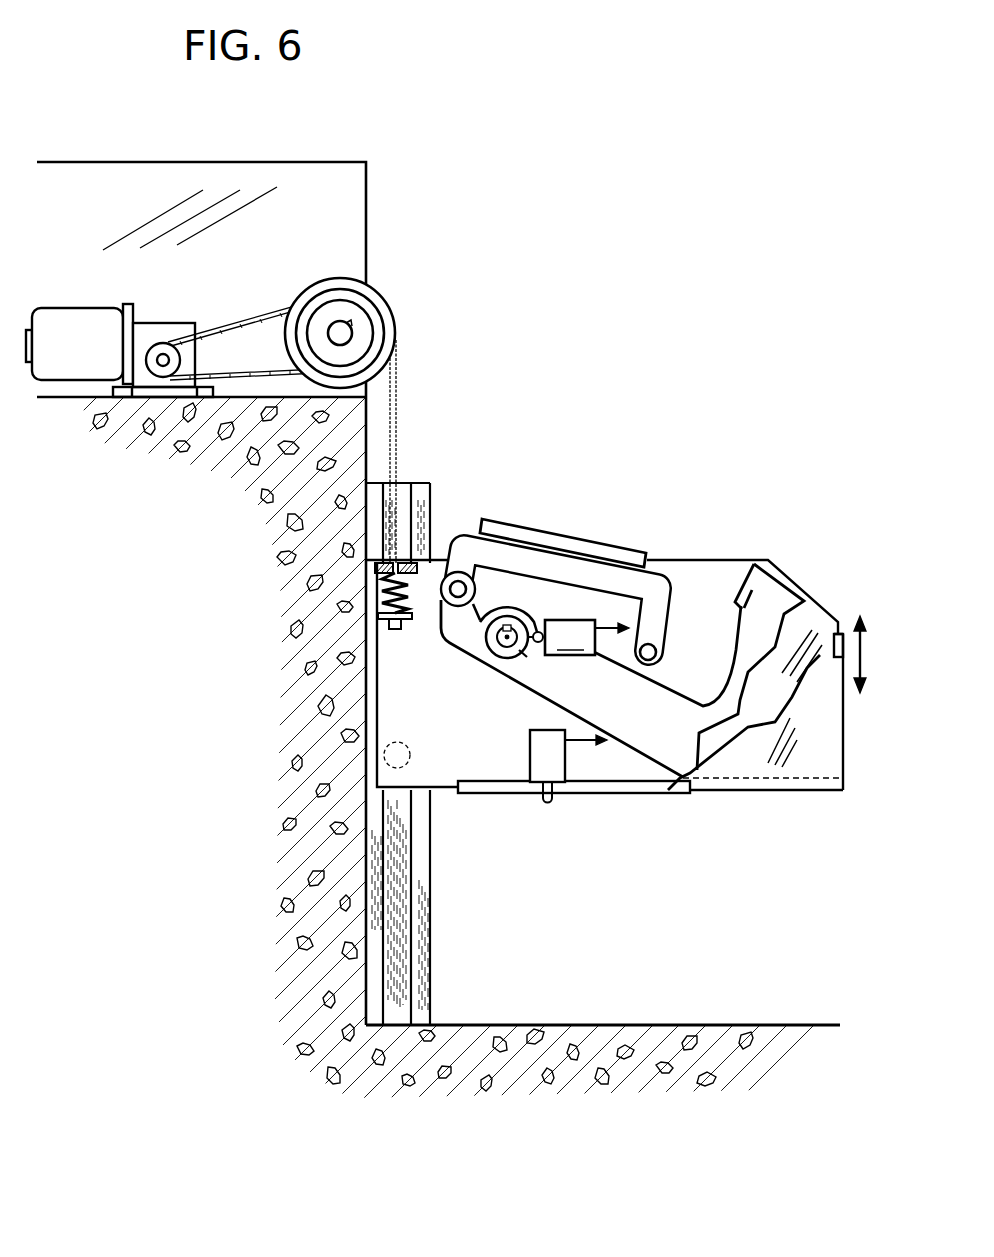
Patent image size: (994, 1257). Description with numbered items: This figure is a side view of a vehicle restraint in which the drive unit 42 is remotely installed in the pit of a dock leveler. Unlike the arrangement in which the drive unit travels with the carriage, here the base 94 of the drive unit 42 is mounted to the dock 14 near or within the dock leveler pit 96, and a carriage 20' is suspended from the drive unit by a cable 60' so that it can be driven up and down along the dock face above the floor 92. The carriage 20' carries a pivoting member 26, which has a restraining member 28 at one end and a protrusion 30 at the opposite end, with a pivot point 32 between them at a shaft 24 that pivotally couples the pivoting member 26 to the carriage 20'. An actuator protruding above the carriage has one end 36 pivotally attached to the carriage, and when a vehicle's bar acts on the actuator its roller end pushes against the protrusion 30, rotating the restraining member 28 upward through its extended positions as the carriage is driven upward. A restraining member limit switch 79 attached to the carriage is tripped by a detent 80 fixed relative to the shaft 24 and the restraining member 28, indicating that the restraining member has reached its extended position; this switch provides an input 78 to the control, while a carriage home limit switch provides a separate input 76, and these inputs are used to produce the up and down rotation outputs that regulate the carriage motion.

The dock 14 is at (367, 255).
The dock leveler pit 96 is at (262, 263).
The base 94 is at (110, 388).
The cable 60' is at (420, 451).
The carriage 20' is at (811, 598).
The restraining member 28 is at (747, 582).
The shaft 24 is at (514, 634).
The input 78 is at (598, 626).
The restraining member limit switch 79 is at (561, 637).
The end of actuator 36 is at (663, 652).
The protrusion 30 is at (453, 625).
The pivot point 32 is at (490, 641).
The detent 80 is at (520, 655).
The drive unit 42 is at (724, 694).
The pivoting member 26 is at (525, 688).
The input 76 is at (583, 740).
The floor 92 is at (773, 1023).